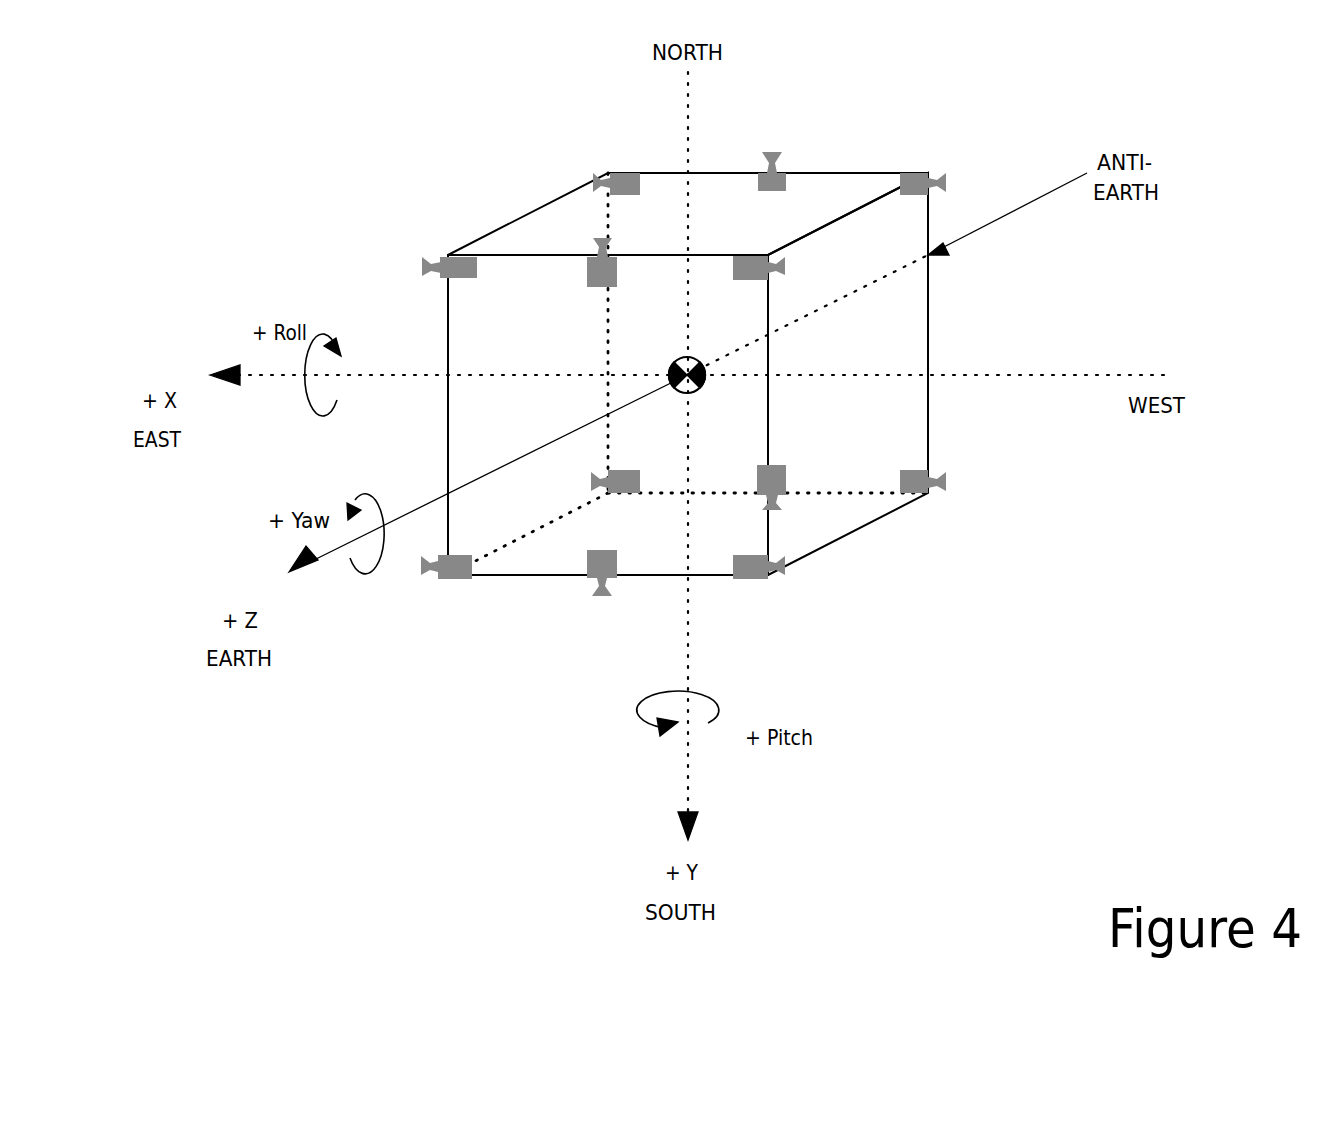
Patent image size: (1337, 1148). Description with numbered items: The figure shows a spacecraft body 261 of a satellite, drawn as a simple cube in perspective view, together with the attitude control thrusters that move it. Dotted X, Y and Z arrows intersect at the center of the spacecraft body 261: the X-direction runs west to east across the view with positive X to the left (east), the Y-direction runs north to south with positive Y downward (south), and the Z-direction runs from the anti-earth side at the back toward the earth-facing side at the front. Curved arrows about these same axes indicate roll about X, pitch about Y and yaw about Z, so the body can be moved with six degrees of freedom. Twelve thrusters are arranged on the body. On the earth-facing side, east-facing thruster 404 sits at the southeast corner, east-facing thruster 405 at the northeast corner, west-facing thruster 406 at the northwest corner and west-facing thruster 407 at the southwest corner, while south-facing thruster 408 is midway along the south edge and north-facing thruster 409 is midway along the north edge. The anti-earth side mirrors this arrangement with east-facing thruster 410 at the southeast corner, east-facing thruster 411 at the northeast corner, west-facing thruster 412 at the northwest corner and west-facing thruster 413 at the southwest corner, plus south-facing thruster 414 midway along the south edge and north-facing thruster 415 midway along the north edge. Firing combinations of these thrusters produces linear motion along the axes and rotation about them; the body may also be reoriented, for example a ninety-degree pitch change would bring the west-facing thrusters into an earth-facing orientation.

The spacecraft body 261 is at (917, 90).
The east-facing thruster 404 is at (453, 581).
The east-facing thruster 405 is at (452, 256).
The west-facing thruster 406 is at (780, 265).
The west-facing thruster 407 is at (757, 578).
The south-facing thruster 408 is at (601, 596).
The north-facing thruster 409 is at (600, 252).
The east-facing thruster 410 is at (617, 494).
The east-facing thruster 411 is at (600, 178).
The west-facing thruster 412 is at (930, 173).
The west-facing thruster 413 is at (930, 473).
The south-facing thruster 414 is at (775, 495).
The north-facing thruster 415 is at (770, 152).